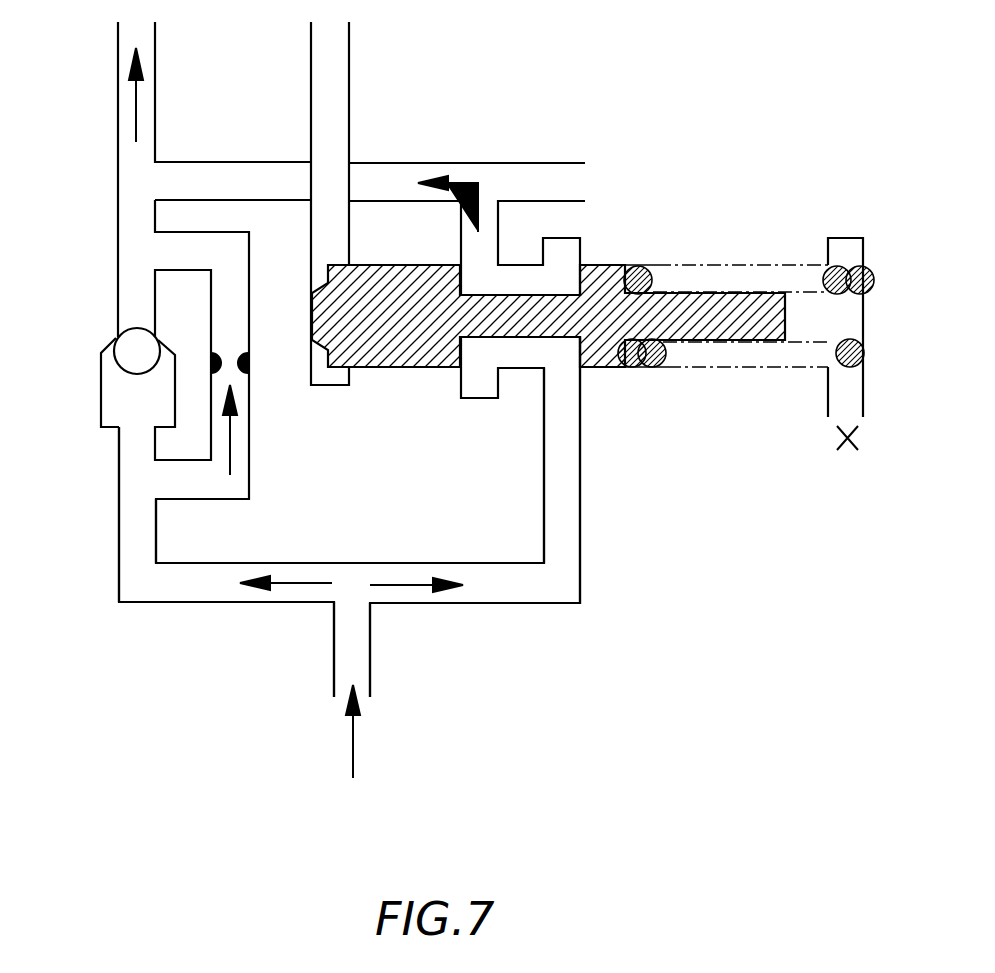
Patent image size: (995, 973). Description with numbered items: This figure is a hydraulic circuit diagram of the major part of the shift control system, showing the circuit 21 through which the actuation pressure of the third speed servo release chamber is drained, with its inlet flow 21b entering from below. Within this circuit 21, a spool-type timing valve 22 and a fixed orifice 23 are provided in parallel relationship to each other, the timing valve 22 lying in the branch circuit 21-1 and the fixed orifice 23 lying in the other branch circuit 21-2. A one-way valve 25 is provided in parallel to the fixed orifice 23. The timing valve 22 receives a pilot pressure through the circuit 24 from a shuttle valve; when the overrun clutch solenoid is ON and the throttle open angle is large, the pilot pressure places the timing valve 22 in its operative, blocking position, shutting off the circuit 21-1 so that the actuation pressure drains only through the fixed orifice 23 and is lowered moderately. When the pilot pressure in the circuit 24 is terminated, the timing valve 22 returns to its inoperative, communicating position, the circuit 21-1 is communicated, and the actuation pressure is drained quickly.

The circuit 21 is at (372, 642).
The circuit 21-1 is at (582, 547).
The second branch passage 21-2 is at (128, 567).
The inlet flow 21b is at (353, 758).
The timing valve 22 is at (600, 368).
The fixed orifice 23 is at (228, 350).
The circuit 24 is at (329, 143).
The one-way valve 25 is at (100, 383).